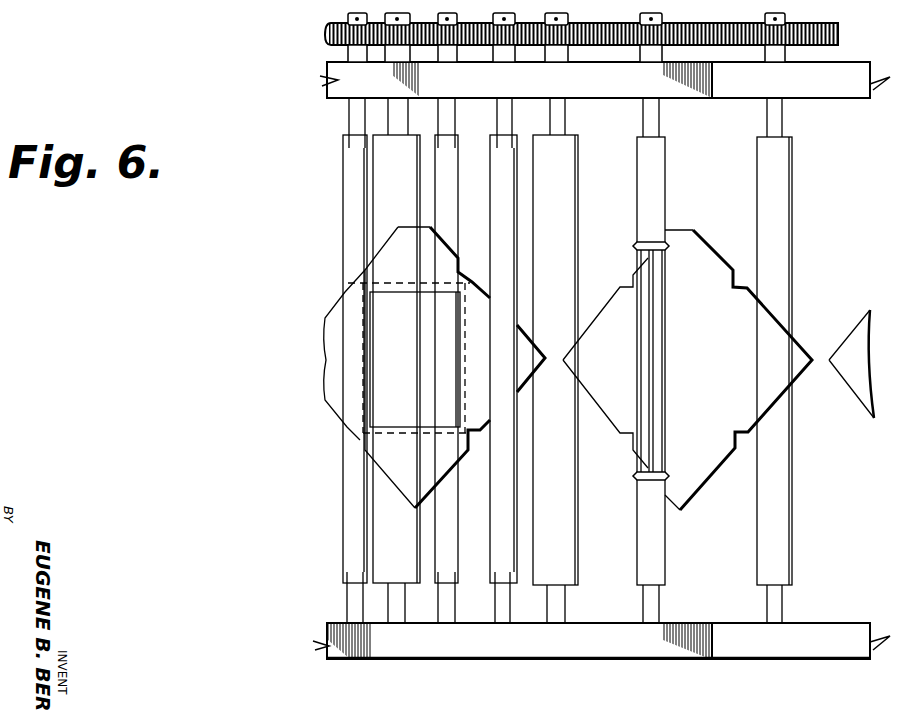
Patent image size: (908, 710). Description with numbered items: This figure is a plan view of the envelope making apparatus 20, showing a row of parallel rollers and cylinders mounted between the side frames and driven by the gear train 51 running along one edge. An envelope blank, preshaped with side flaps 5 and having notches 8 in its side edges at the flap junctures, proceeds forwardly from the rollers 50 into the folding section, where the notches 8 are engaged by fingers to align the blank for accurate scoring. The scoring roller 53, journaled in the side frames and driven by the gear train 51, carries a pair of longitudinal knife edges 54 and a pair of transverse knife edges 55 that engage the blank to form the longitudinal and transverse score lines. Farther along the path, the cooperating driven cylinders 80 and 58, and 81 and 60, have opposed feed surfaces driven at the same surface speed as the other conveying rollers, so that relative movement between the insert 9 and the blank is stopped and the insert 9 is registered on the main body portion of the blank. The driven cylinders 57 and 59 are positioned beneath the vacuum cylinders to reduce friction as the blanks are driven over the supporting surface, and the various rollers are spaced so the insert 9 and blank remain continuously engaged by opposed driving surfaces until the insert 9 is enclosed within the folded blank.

The side flaps 5 is at (428, 247).
The notches 8 is at (358, 436).
The insert 9 is at (405, 298).
The apparatus 20 is at (802, 192).
The rollers 50 is at (757, 515).
The gear train 51 is at (722, 25).
The scoring roller 53 is at (640, 337).
The longitudinal knife edges 54 is at (650, 388).
The transverse knife edges 55 is at (634, 245).
The driven cylinder 57 is at (578, 557).
The driven cylinder 58 is at (493, 578).
The driven cylinder 59 is at (403, 575).
The driven cylinder 60 is at (343, 578).
The driven cylinder 80 is at (497, 540).
The driven cylinder 81 is at (349, 534).